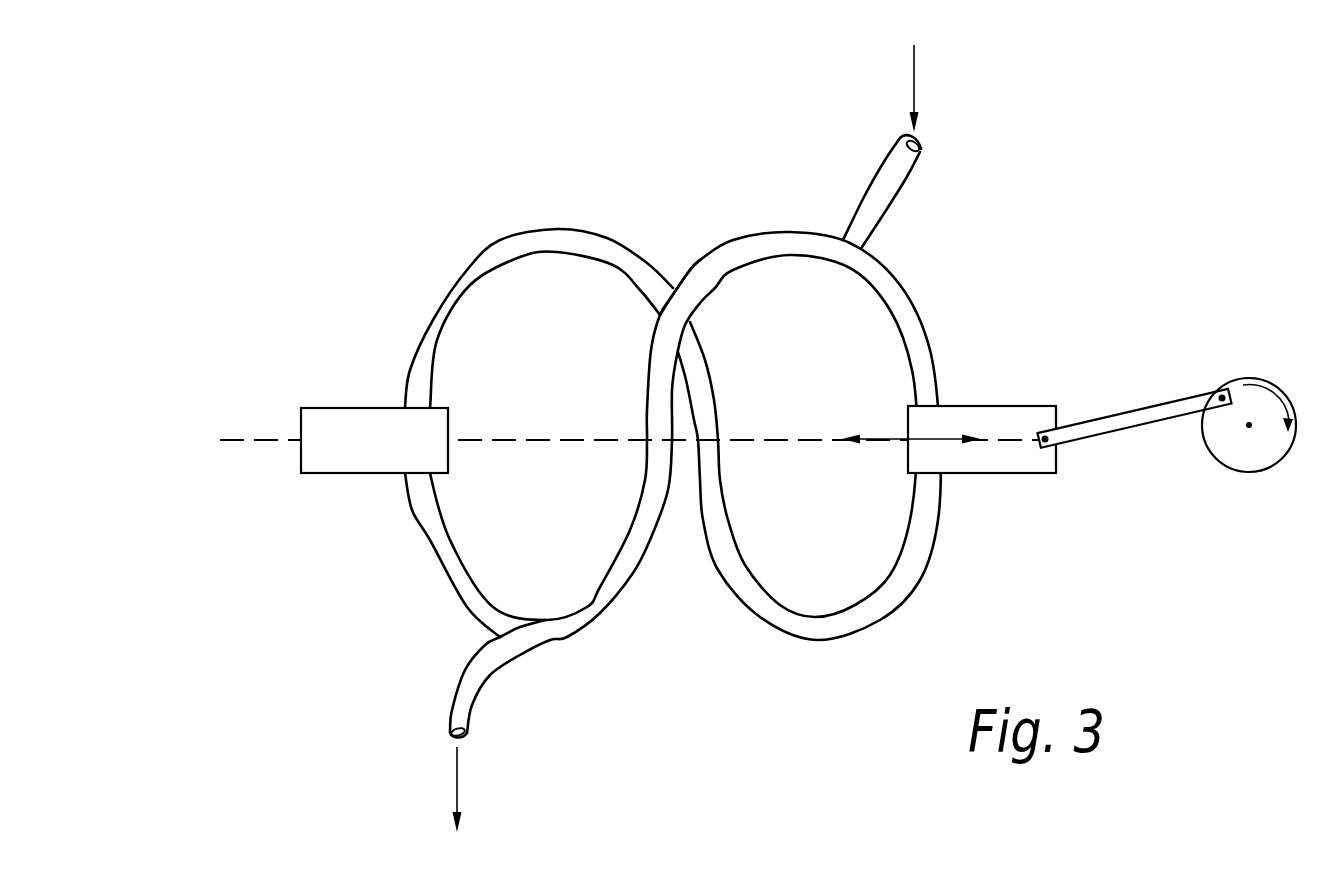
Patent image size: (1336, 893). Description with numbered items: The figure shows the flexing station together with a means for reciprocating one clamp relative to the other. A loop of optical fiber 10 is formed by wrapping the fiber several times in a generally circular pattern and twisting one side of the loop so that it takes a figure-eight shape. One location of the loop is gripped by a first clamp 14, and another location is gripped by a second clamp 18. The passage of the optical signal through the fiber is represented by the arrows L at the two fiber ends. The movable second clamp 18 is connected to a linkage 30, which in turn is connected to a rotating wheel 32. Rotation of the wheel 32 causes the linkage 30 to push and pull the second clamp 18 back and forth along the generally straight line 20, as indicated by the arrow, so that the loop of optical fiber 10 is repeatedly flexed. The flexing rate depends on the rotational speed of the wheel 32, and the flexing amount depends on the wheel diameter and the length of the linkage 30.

The optical fiber 10 is at (540, 229).
The first clamp 14 is at (317, 407).
The second clamp 18 is at (983, 412).
The generally straight line 20 is at (243, 442).
The linkage 30 is at (1148, 418).
The rotating wheel 32 is at (1280, 450).
The optical signal passage L is at (914, 68).